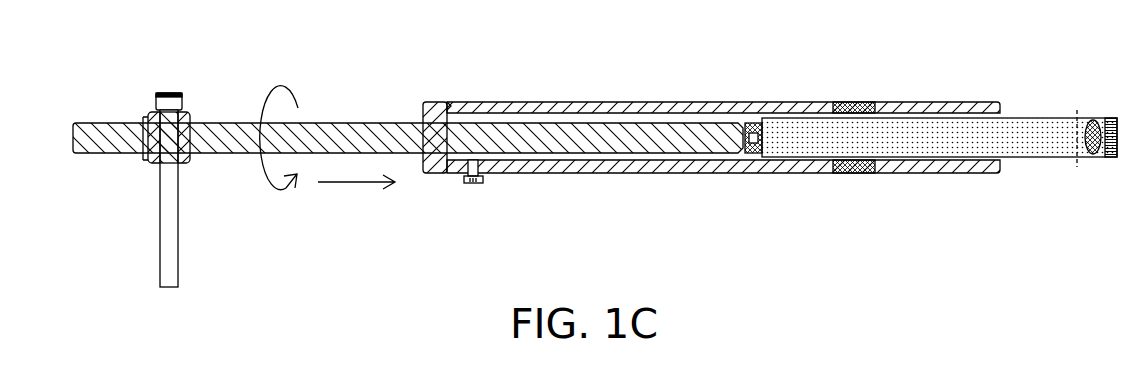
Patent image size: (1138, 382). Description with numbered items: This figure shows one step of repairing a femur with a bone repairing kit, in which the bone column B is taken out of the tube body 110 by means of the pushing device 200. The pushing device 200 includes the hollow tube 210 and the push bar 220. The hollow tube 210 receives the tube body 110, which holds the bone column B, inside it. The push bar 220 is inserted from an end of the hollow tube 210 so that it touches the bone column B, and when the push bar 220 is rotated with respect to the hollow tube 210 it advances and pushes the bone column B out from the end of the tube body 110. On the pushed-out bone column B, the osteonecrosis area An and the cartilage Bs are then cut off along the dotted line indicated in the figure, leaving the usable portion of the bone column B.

The pushing device 200 is at (374, 44).
The push bar 220 is at (391, 121).
The hollow tube 210 is at (453, 119).
The tube body 110 is at (583, 157).
The bone column B is at (1033, 158).
The cartilage Bs is at (1106, 118).
The osteonecrosis area An is at (1093, 158).